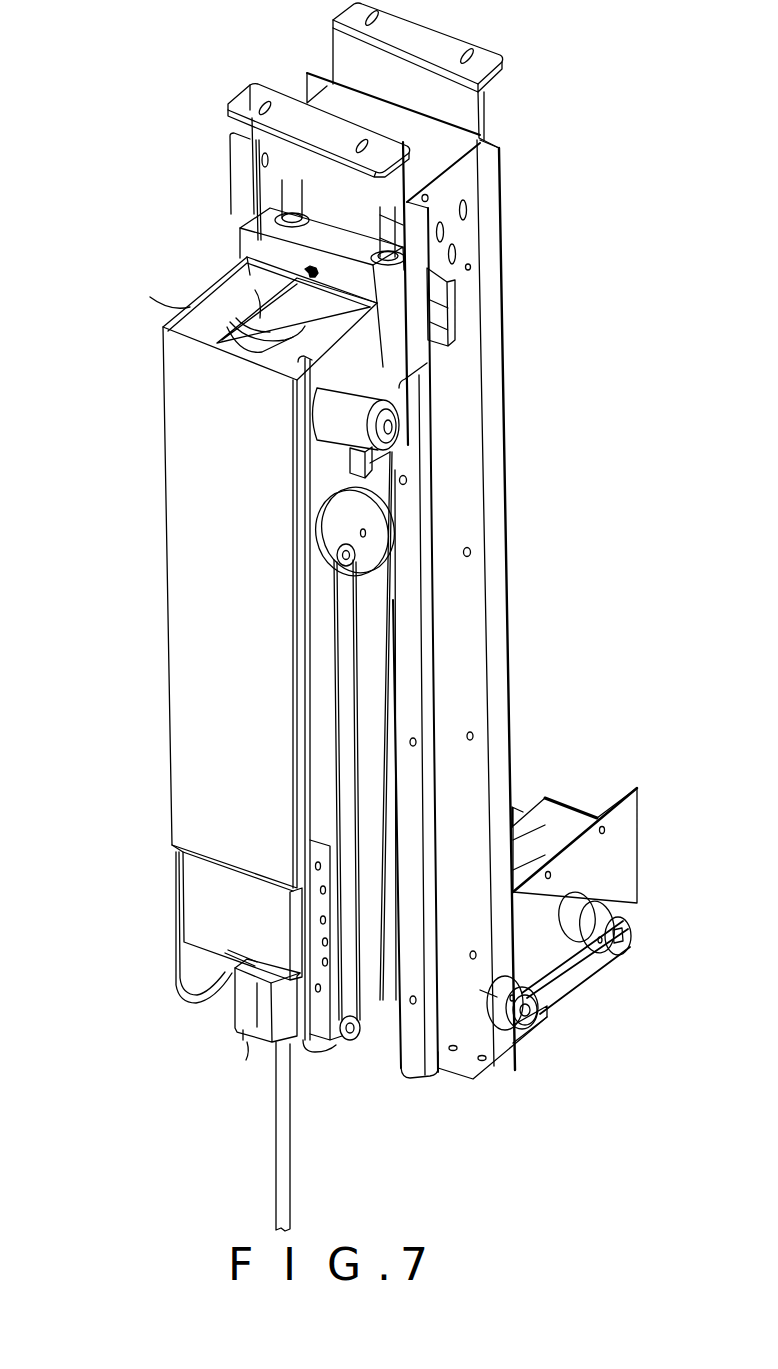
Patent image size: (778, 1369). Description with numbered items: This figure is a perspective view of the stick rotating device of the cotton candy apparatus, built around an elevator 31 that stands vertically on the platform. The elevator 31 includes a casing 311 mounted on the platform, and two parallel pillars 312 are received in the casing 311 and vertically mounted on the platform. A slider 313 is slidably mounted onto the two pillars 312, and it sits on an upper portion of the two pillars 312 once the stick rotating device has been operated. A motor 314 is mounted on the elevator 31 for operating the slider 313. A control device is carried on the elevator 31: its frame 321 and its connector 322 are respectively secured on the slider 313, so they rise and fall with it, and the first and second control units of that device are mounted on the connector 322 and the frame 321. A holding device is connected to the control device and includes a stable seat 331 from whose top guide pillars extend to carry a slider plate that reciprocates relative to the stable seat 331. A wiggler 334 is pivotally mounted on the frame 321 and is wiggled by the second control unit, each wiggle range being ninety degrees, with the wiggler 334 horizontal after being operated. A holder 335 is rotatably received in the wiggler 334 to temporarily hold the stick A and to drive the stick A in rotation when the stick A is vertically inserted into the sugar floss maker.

The elevator 31 is at (519, 481).
The casing 311 is at (467, 385).
The pillars 312 is at (283, 212).
The slider 313 is at (373, 272).
The motor 314 is at (563, 813).
The frame 321 is at (217, 270).
The connector 322 is at (240, 317).
The stable seat 331 is at (213, 903).
The wiggler 334 is at (248, 1013).
The holder 335 is at (238, 1068).
The stick A is at (287, 1155).